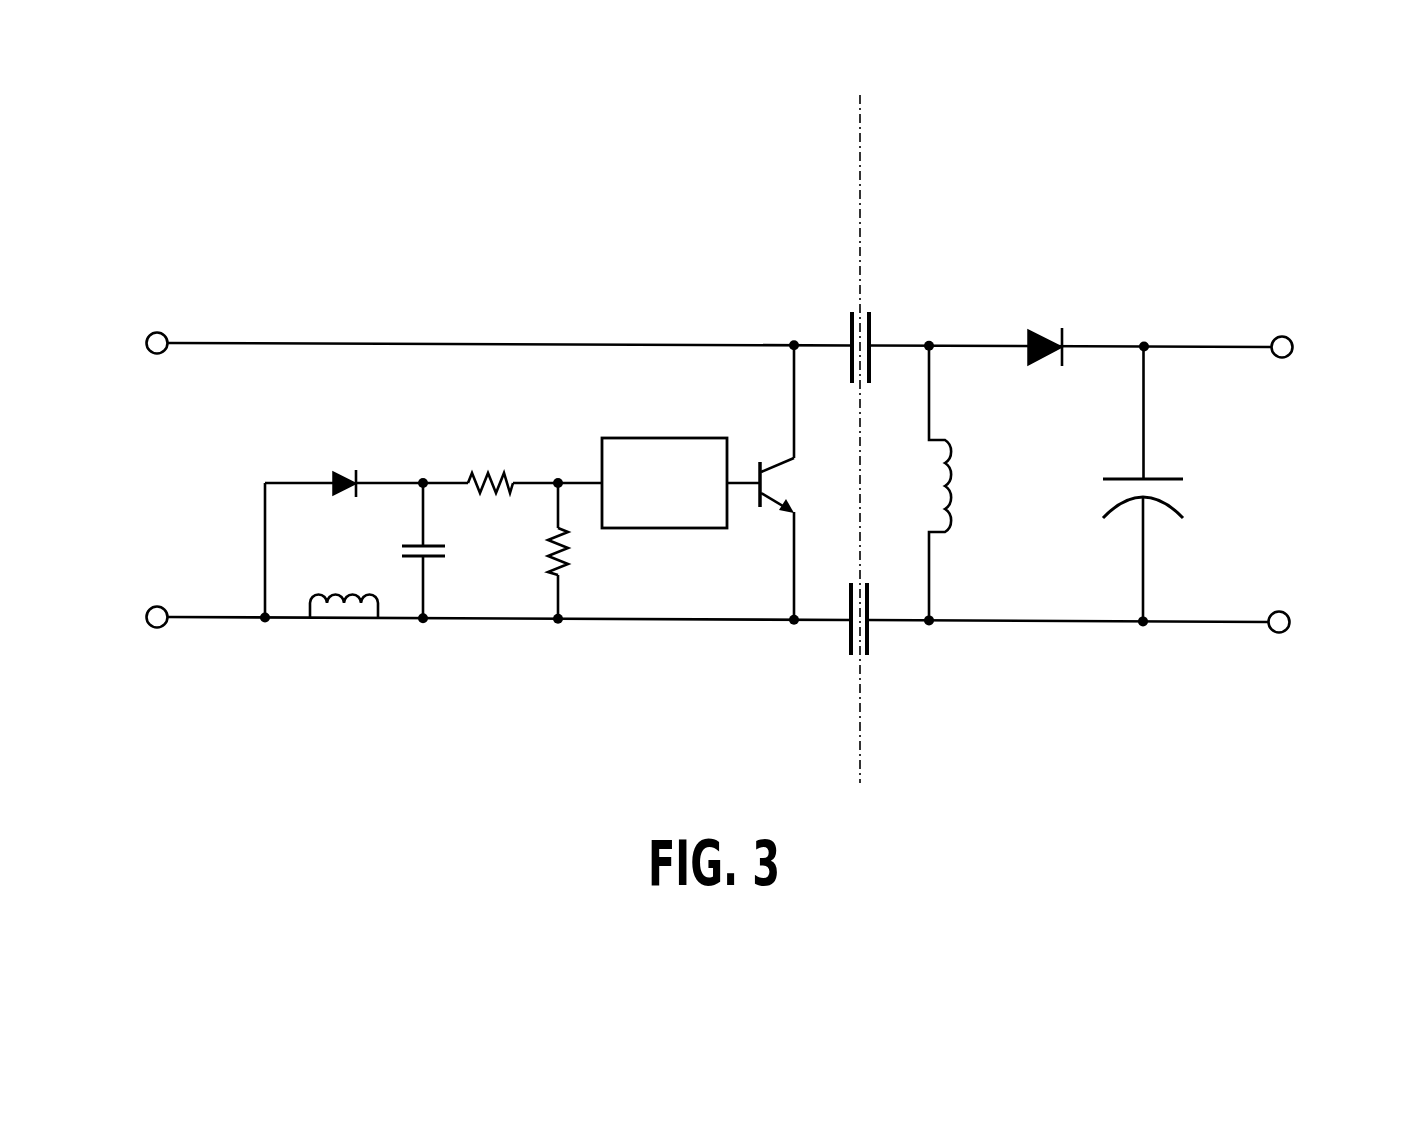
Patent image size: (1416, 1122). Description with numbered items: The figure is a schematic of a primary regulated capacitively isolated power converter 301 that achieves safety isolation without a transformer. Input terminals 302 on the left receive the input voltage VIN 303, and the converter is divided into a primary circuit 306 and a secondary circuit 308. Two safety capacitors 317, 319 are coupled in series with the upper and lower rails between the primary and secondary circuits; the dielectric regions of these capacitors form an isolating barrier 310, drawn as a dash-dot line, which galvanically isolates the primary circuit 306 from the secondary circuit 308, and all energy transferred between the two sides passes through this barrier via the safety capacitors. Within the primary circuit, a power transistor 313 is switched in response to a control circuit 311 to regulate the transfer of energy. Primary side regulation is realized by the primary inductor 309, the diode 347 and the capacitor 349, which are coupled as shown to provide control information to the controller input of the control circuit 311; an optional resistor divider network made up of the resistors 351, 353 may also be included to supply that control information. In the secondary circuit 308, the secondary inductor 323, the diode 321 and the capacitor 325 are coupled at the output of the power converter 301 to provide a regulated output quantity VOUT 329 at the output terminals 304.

The power converter 301 is at (1291, 236).
The input terminals 302 is at (138, 316).
The VIN 303 is at (128, 490).
The output terminals 304 is at (1299, 337).
The primary circuit 306 is at (799, 200).
The secondary circuit 308 is at (957, 200).
The inductor L1 309 is at (333, 653).
The isolating barrier 310 is at (873, 748).
The control circuit 311 is at (672, 428).
The power transistor Q1 313 is at (797, 467).
The safety capacitor 317 is at (831, 302).
The safety capacitor 319 is at (882, 642).
The diode 321 is at (1045, 315).
The inductor L2 323 is at (963, 510).
The capacitor 325 is at (1108, 463).
The VOUT 329 is at (1335, 490).
The diode 347 is at (356, 470).
The capacitor 349 is at (446, 552).
The resistor 351 is at (497, 462).
The resistor 353 is at (580, 553).